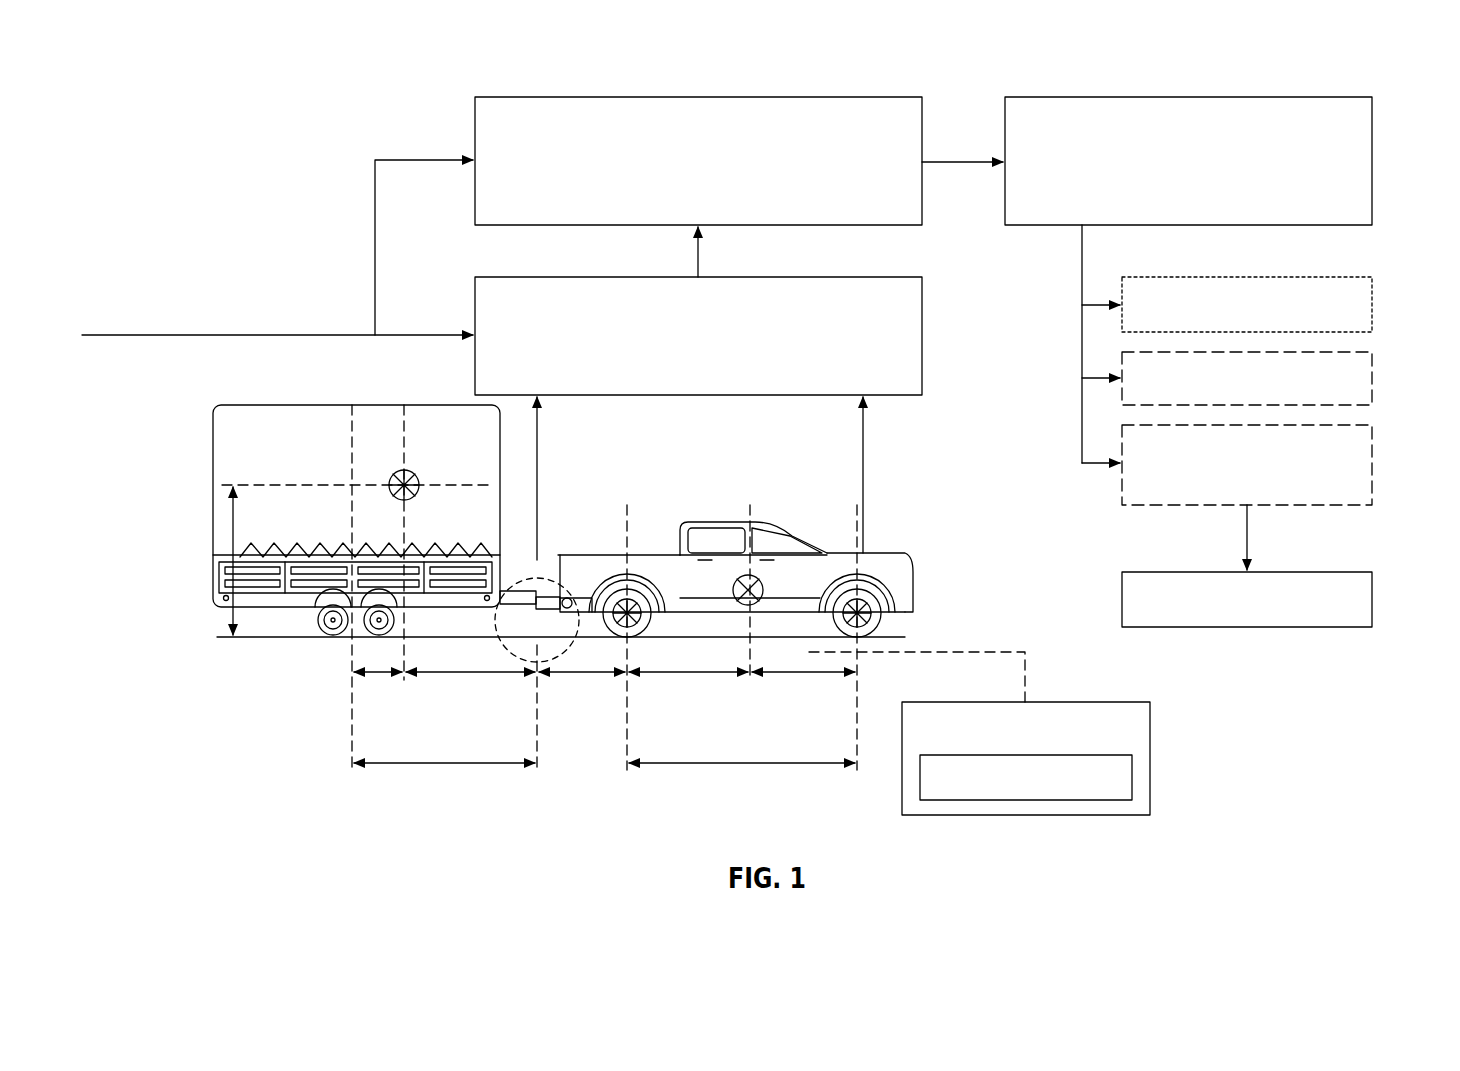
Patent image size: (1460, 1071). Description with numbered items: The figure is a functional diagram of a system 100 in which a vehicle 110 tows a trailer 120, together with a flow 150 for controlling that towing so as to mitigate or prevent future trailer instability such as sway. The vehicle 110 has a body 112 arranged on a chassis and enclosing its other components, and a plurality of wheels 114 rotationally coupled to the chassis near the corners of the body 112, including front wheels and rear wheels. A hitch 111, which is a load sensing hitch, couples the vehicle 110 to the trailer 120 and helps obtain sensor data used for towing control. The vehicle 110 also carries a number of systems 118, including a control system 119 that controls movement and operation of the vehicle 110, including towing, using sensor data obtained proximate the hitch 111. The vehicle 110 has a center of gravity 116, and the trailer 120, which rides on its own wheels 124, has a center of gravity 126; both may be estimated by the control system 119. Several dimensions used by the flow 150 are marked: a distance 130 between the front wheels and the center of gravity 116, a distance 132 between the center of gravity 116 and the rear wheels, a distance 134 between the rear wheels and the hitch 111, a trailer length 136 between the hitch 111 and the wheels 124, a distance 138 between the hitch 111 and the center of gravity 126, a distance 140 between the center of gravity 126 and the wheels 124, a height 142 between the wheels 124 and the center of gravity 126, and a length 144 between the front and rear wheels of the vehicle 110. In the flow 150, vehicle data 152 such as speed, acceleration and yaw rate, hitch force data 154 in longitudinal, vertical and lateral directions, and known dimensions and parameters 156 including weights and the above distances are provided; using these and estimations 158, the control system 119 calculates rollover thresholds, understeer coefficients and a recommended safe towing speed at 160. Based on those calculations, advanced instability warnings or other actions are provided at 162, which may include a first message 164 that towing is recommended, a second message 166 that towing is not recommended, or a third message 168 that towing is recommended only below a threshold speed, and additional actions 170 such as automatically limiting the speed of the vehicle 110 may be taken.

The system 100 is at (178, 396).
The vehicle 110 is at (798, 572).
The hitch 111 is at (541, 560).
The body 112 is at (641, 554).
The wheels 114 is at (633, 640).
The center of gravity 116 is at (757, 580).
The systems 118 is at (1150, 725).
The control system 119 is at (1132, 775).
The trailer 120 is at (356, 506).
The wheels 124 is at (360, 640).
The center of gravity 126 is at (410, 476).
The distance a 130 is at (804, 674).
The distance b 132 is at (690, 674).
The distance c 134 is at (584, 674).
The distance D 136 is at (443, 765).
The distance e 138 is at (472, 674).
The distance f 140 is at (380, 674).
The height h 142 is at (232, 538).
The length l 144 is at (743, 765).
The flow 150 is at (158, 68).
The vehicle data 152 is at (864, 425).
The hitch force data 154 is at (538, 478).
The dimensions and parameters 156 is at (246, 334).
The estimations 158 is at (862, 277).
The calculation of rollover thresholds and understeer coefficients 160 is at (862, 97).
The advanced instability warnings and/or other actions 162 is at (1308, 97).
The first message 164 is at (1372, 300).
The second message 166 is at (1372, 378).
The third message 168 is at (1372, 465).
The additional actions 170 is at (1372, 598).